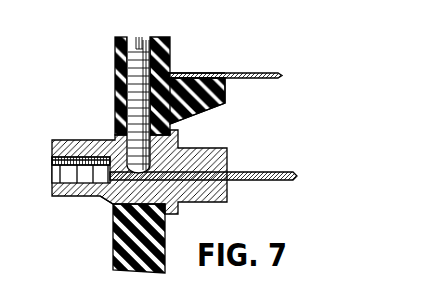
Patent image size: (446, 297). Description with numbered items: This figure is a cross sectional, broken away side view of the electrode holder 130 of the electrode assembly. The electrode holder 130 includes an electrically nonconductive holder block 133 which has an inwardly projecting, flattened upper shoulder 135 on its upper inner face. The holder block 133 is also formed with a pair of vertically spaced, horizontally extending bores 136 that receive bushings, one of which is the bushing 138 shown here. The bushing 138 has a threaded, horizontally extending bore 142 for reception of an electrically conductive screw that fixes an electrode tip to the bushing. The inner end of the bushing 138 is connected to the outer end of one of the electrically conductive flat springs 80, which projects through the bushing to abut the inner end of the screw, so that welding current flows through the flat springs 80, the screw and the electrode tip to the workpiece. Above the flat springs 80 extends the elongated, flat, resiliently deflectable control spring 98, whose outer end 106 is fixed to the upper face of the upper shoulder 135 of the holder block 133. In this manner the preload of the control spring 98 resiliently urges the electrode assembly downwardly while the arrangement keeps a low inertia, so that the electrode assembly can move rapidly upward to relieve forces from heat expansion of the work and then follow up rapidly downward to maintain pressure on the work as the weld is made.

The electrode holder 130 is at (174, 37).
The outer end of the control spring 106 is at (203, 72).
The control spring 98 is at (272, 72).
The upper shoulder 135 is at (225, 103).
The flat springs 80 is at (271, 172).
The threaded bore 142 is at (62, 177).
The bores 136 is at (113, 199).
The holder block 133 is at (112, 256).
The bushing 138 is at (203, 202).